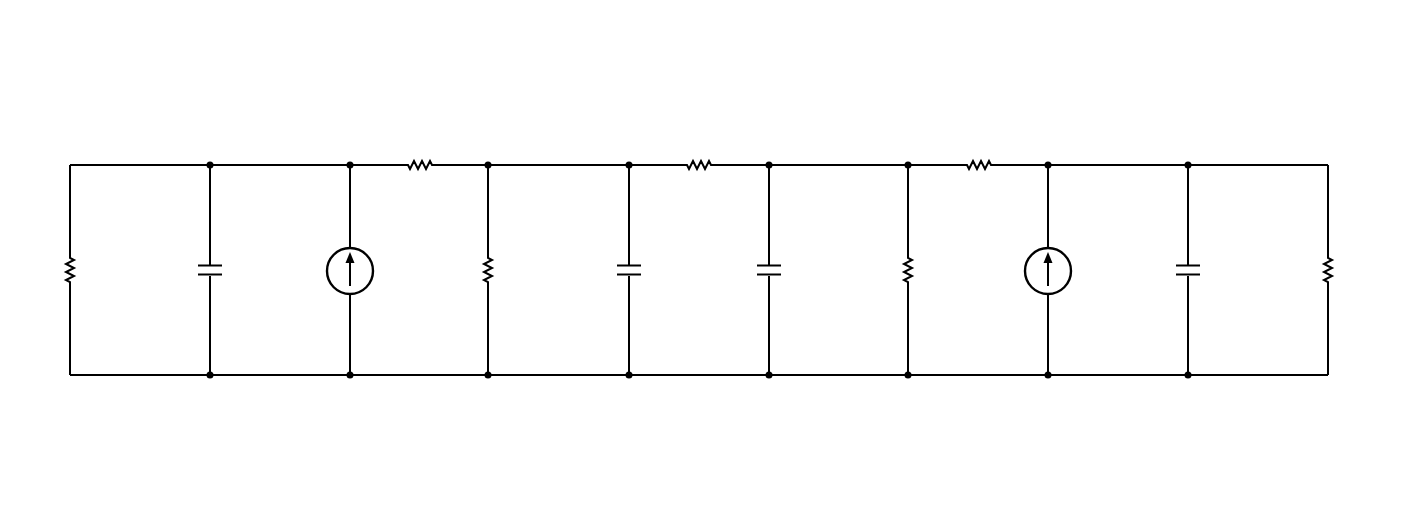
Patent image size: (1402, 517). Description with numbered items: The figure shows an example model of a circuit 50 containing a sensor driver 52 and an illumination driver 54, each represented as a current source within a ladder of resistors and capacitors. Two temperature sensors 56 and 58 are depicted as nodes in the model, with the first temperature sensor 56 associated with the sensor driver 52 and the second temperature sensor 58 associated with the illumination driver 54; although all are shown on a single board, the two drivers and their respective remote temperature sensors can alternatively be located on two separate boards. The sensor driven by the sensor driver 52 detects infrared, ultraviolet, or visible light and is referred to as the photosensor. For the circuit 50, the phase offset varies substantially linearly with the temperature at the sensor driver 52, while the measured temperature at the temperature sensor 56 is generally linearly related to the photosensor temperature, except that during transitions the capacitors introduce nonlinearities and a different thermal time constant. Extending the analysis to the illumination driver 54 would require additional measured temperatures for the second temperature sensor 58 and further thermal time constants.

The circuit 50 is at (316, 83).
The sensor driver 52 is at (326, 271).
The illumination driver 54 is at (1035, 289).
The temperature sensor 56 is at (623, 171).
The second temperature sensor 58 is at (914, 171).